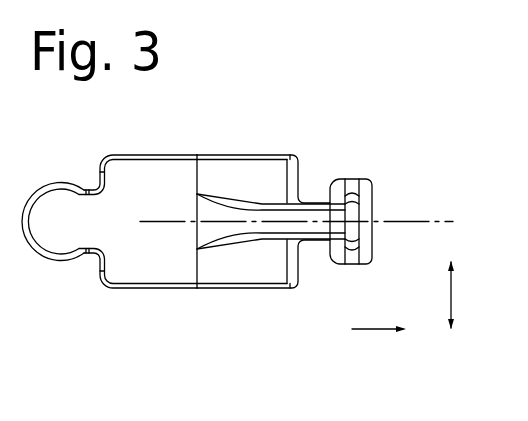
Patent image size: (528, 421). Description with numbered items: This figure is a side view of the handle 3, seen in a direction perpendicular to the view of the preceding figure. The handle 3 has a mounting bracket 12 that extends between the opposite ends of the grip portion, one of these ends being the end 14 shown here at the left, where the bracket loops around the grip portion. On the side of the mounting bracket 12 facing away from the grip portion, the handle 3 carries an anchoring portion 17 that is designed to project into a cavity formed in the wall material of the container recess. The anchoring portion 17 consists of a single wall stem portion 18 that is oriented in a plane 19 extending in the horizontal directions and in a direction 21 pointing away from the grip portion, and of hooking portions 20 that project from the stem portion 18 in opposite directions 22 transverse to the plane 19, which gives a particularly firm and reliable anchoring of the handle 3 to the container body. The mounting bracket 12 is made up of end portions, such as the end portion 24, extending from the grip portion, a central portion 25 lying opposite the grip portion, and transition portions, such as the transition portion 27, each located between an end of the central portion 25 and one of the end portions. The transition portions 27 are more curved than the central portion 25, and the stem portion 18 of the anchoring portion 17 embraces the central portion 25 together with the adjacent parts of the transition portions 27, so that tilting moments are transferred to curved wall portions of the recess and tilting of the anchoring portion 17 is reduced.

The handle 3 is at (312, 140).
The mounting bracket 12 is at (270, 146).
The end of the grip portion 14 is at (62, 208).
The anchoring portion 17 is at (357, 179).
The stem portion 18 is at (320, 227).
The plane 19 is at (447, 222).
The hooking portions 20 is at (352, 192).
The direction away from the grip portion 21 is at (376, 331).
The directions transverse to the plane 22 is at (456, 291).
The end portion of the mounting bracket 24 is at (143, 176).
The central portion 25 is at (291, 175).
The transition portion 27 is at (224, 168).